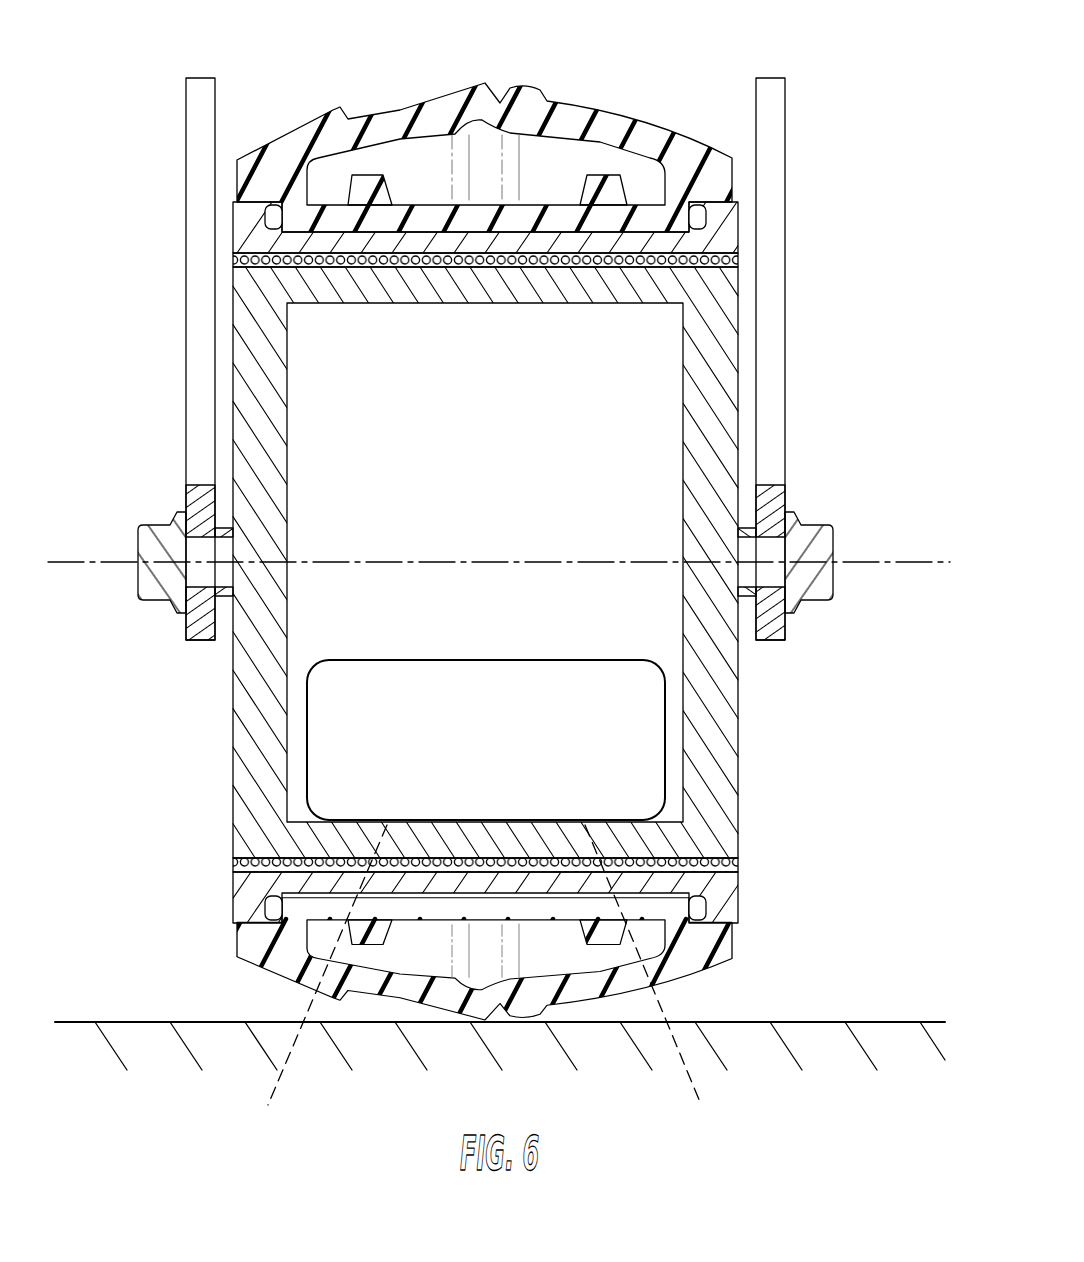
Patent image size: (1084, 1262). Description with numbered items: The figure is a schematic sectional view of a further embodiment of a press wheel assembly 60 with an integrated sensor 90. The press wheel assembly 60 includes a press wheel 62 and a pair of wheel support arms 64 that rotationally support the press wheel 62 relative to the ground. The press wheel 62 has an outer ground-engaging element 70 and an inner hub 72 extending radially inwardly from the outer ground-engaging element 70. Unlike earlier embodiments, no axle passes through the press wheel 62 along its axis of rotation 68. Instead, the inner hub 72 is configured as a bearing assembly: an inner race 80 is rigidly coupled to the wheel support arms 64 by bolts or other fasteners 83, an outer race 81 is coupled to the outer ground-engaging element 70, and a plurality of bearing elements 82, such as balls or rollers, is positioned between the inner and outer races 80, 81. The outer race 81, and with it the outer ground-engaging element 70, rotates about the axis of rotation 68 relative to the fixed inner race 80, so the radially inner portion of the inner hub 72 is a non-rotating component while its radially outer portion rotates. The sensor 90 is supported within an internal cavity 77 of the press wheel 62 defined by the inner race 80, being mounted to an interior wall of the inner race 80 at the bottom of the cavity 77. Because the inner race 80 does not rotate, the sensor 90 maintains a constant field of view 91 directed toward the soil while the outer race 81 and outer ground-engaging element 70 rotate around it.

The press wheel assembly 60 is at (499, 516).
The press wheel 62 is at (526, 143).
The wheel support arms 64 is at (196, 367).
The axis of rotation 68 is at (900, 570).
The outer ground-engaging element 70 is at (610, 128).
The inner hub 72 is at (472, 569).
The internal cavity 77 is at (499, 510).
The inner race 80 is at (533, 562).
The outer race 81 is at (715, 880).
The bearing elements 82 is at (238, 838).
The fasteners 83 is at (150, 543).
The sensor 90 is at (499, 753).
The field of view 91 is at (278, 1083).